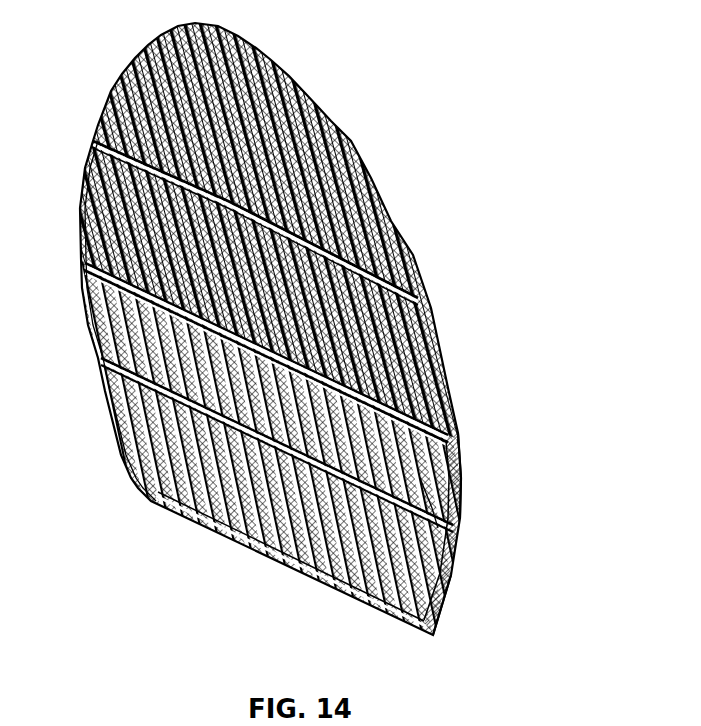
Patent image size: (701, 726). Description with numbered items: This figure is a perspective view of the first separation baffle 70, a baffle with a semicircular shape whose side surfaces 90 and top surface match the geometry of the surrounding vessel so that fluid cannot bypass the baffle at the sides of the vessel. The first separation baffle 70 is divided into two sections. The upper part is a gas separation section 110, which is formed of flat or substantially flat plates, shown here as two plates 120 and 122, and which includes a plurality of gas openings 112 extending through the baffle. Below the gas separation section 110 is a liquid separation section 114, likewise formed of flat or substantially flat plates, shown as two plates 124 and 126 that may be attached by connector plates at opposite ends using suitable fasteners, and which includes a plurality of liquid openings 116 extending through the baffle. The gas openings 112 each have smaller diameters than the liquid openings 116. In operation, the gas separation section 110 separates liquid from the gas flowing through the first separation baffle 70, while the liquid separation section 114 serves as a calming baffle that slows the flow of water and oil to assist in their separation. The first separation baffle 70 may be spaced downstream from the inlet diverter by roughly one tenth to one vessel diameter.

The first separation baffle 70 is at (350, 367).
The gas separation section 110 is at (350, 367).
The plate 120 is at (343, 140).
The gas openings 112 is at (363, 177).
The plate 122 is at (425, 320).
The plate 124 is at (437, 467).
The side surface 90 is at (452, 440).
The liquid openings 116 is at (420, 497).
The liquid separation section 114 is at (444, 554).
The plate 126 is at (430, 580).